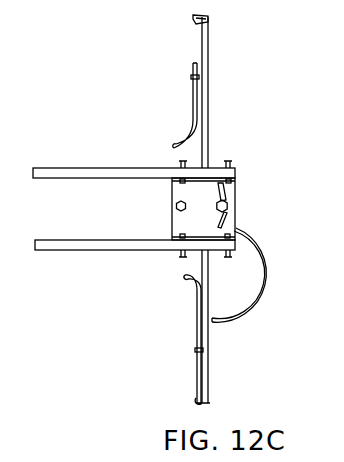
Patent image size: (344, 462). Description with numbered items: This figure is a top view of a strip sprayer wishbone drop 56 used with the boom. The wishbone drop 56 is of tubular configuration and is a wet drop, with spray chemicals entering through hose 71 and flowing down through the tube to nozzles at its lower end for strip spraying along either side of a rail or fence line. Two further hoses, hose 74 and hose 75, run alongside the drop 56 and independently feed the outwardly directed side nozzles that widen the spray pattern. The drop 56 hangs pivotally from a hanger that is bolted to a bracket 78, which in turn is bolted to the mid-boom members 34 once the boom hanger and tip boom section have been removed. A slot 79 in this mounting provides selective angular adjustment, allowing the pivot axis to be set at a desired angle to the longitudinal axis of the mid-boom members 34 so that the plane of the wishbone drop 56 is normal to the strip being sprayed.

The mid-boom members 34 is at (56, 193).
The wishbone drop 56 is at (212, 361).
The hose 71 is at (260, 284).
The hose 74 is at (197, 312).
The hose 75 is at (193, 101).
The bracket 78 is at (236, 193).
The slot 79 is at (226, 214).